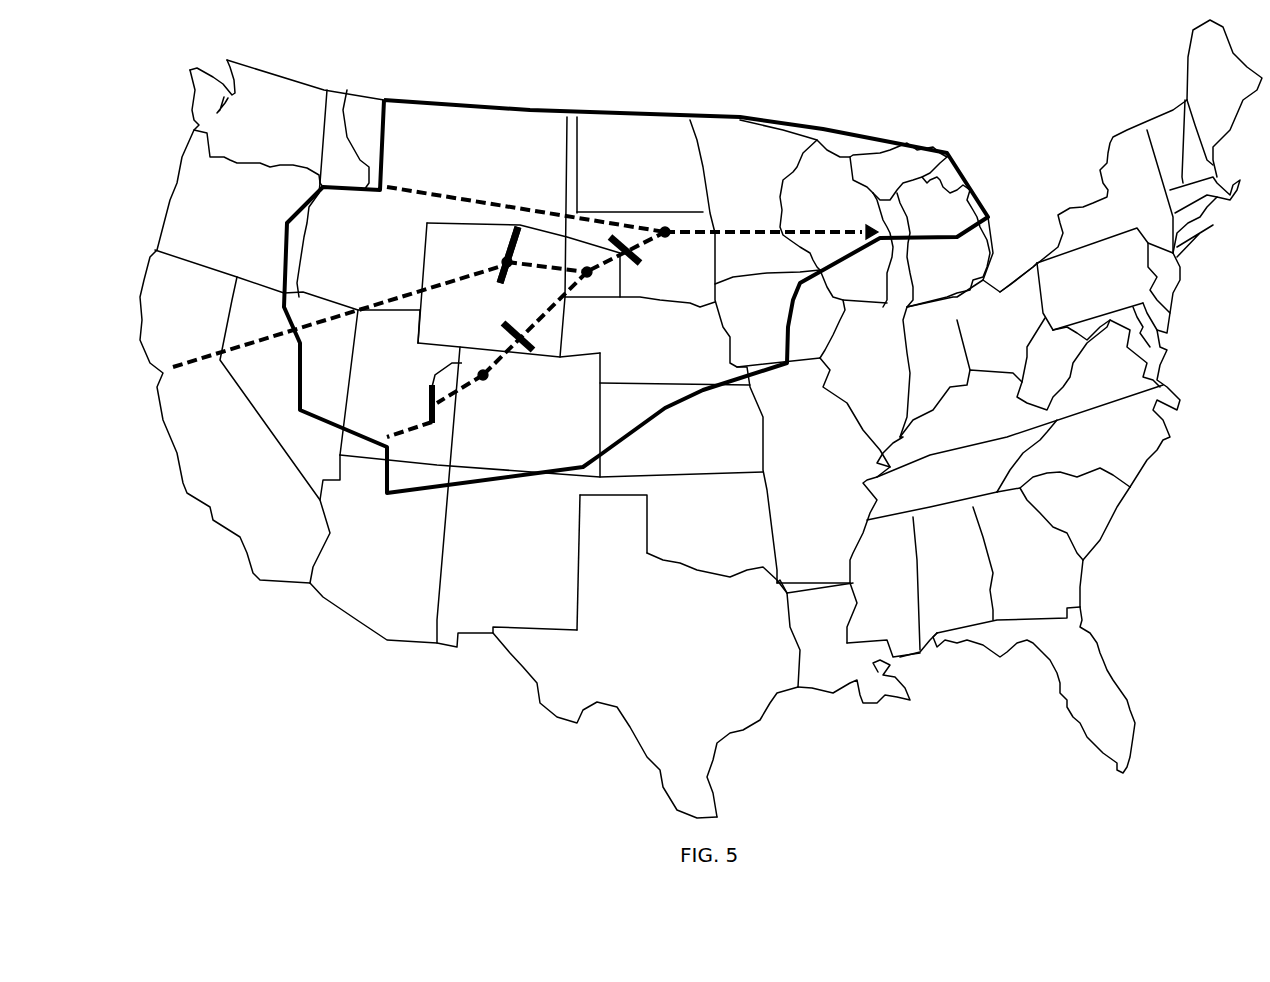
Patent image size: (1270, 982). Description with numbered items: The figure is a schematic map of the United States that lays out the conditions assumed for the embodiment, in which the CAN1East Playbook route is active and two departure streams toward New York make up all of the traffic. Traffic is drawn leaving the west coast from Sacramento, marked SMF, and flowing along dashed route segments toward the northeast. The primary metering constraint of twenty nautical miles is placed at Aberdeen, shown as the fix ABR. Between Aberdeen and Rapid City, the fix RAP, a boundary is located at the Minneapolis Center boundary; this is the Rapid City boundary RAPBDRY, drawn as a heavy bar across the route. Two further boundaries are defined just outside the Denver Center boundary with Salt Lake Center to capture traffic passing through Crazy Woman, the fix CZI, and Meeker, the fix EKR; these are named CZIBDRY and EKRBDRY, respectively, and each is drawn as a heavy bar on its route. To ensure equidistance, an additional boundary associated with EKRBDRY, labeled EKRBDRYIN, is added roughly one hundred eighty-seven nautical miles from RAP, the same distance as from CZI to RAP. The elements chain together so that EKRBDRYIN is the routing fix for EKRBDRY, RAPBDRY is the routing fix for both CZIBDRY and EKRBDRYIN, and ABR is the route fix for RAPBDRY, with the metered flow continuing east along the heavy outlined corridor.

The Crazy Woman fix CZI is at (492, 255).
The Aberdeen fix ABR is at (684, 242).
The Rapid City fix RAP is at (599, 284).
The Meeker fix EKR is at (498, 387).
The SMF airport (Sacramento) SMF is at (168, 353).
The Crazy Woman boundary CZIBDRY is at (490, 272).
The Rapid City boundary RAPBDRY is at (640, 267).
The Meeker boundary EKRBDRY is at (423, 403).
The additional boundary associated to EKRBDRY EKRBDRYIN is at (543, 356).